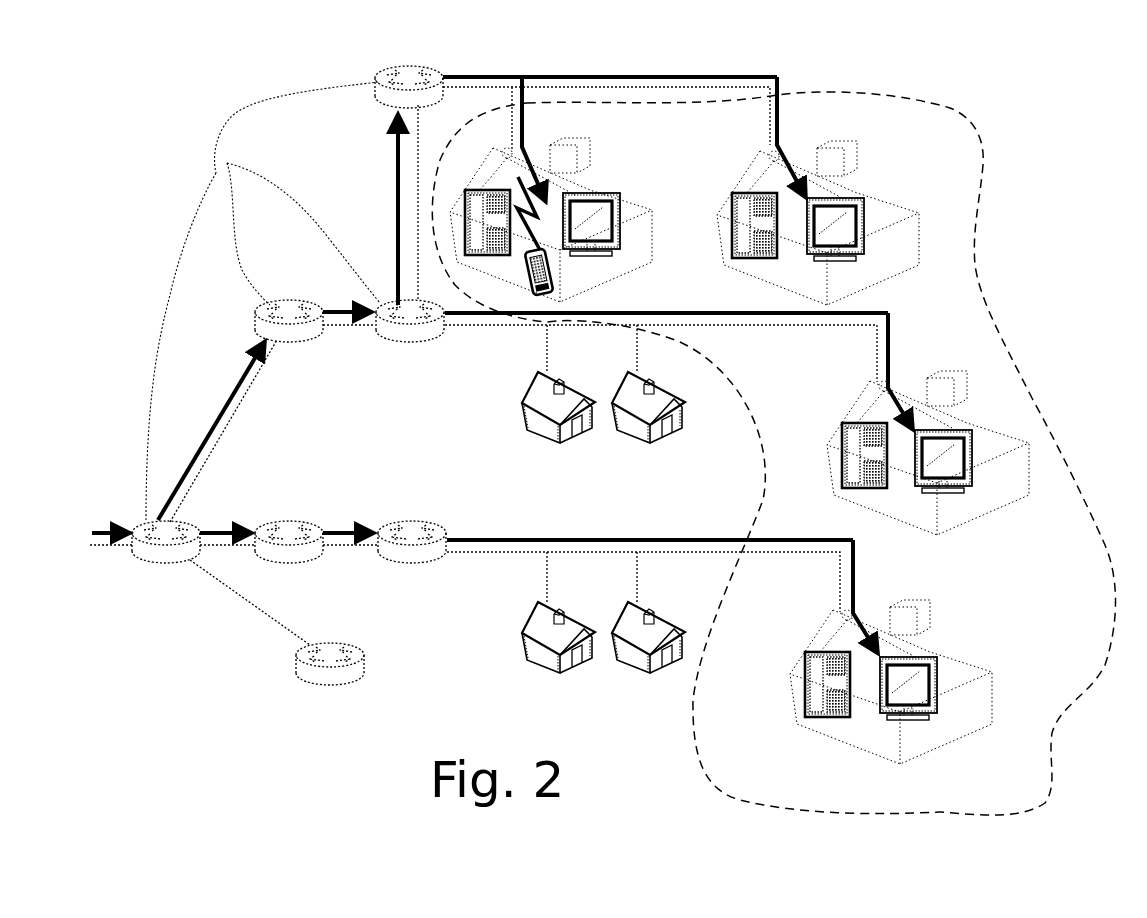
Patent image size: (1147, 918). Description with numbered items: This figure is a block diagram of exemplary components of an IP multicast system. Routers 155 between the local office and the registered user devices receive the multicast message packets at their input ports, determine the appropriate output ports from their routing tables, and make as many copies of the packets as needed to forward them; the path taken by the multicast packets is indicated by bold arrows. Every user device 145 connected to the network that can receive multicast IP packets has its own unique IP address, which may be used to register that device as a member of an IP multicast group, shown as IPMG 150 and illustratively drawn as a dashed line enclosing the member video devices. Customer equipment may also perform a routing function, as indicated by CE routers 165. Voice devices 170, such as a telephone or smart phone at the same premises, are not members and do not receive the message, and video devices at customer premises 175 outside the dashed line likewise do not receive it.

The user device 145 is at (993, 477).
The IP multicast group (IPMG) 150 is at (980, 277).
The routers 155 is at (263, 301).
The CE routers 165 is at (767, 137).
The voice devices 170 is at (870, 488).
The customer premises 175 is at (650, 448).